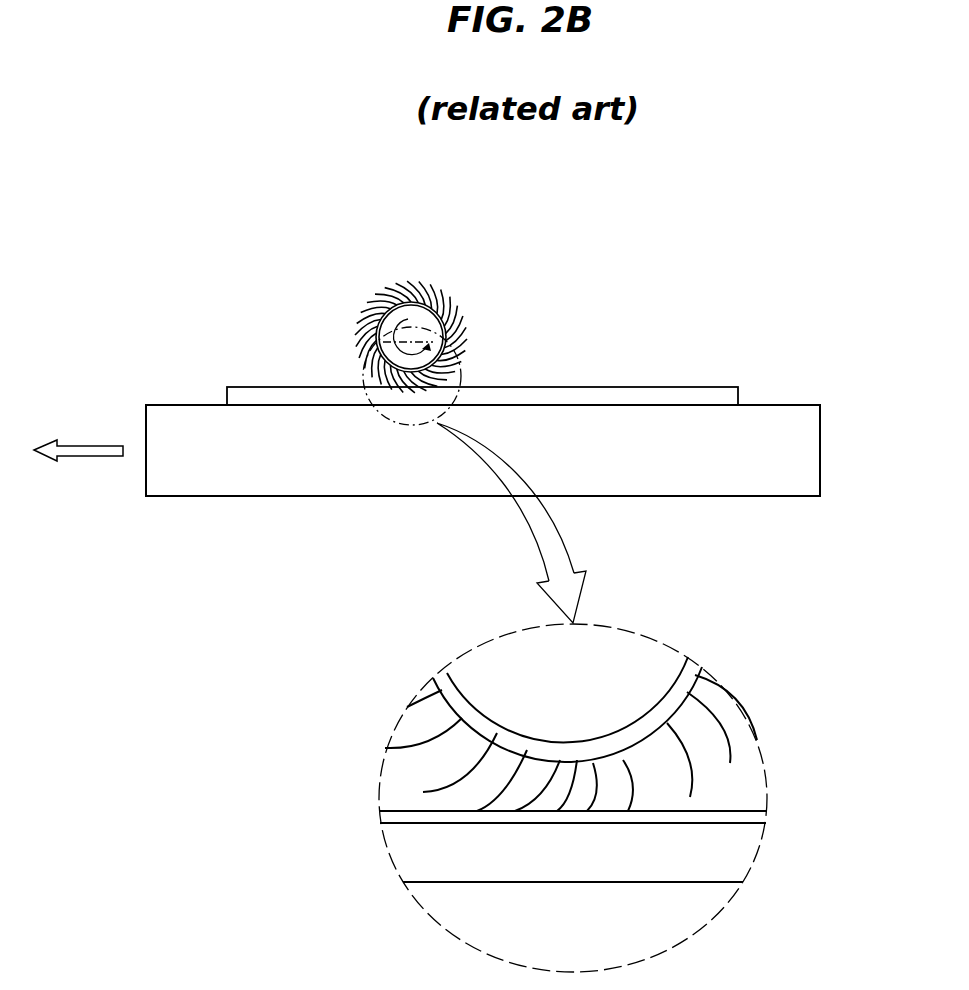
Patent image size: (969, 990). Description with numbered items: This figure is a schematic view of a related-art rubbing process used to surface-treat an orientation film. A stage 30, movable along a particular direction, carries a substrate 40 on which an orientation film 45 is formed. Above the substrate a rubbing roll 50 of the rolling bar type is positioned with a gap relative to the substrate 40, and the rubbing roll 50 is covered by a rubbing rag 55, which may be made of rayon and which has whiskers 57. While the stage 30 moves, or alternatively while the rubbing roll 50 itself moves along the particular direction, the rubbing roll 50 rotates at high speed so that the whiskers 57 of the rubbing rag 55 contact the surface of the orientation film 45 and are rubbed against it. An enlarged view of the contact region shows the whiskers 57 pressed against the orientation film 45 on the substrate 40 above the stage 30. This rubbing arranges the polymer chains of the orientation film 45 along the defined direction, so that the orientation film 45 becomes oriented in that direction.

The stage 30 is at (808, 447).
The substrate 40 is at (678, 395).
The orientation film 45 is at (758, 815).
The rubbing roll 50 is at (418, 320).
The rubbing rag 55 is at (452, 308).
The whiskers 57 is at (465, 332).